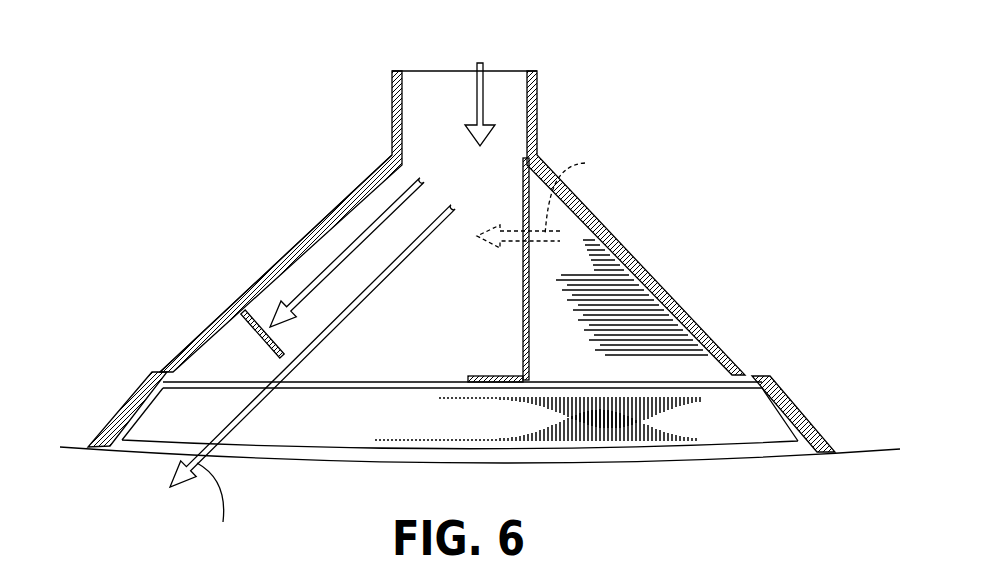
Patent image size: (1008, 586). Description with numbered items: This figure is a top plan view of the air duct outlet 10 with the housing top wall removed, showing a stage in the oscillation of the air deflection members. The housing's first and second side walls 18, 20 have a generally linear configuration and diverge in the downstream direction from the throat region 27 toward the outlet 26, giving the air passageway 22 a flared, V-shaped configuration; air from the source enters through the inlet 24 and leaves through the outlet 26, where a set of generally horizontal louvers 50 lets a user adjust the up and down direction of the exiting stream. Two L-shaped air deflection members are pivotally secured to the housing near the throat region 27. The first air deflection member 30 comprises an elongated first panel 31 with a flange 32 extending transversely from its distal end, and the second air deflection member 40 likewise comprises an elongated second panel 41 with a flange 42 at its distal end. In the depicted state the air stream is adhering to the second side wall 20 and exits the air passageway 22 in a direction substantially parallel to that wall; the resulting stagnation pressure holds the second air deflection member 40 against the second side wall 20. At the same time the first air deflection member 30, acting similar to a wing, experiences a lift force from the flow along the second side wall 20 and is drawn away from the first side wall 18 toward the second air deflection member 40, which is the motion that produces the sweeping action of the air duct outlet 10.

The air duct outlet 10 is at (700, 137).
The first side wall 18 is at (745, 365).
The second side wall 20 is at (213, 335).
The air passageway 22 is at (437, 103).
The inlet 24 is at (527, 98).
The outlet 26 is at (112, 440).
The throat region 27 is at (397, 133).
The first air deflection member 30 is at (524, 258).
The first panel 31 is at (523, 313).
The flange 32 is at (498, 377).
The second air deflection member 40 is at (310, 263).
The second panel 41 is at (348, 217).
The flange 42 is at (277, 343).
The louvers 50 is at (708, 428).